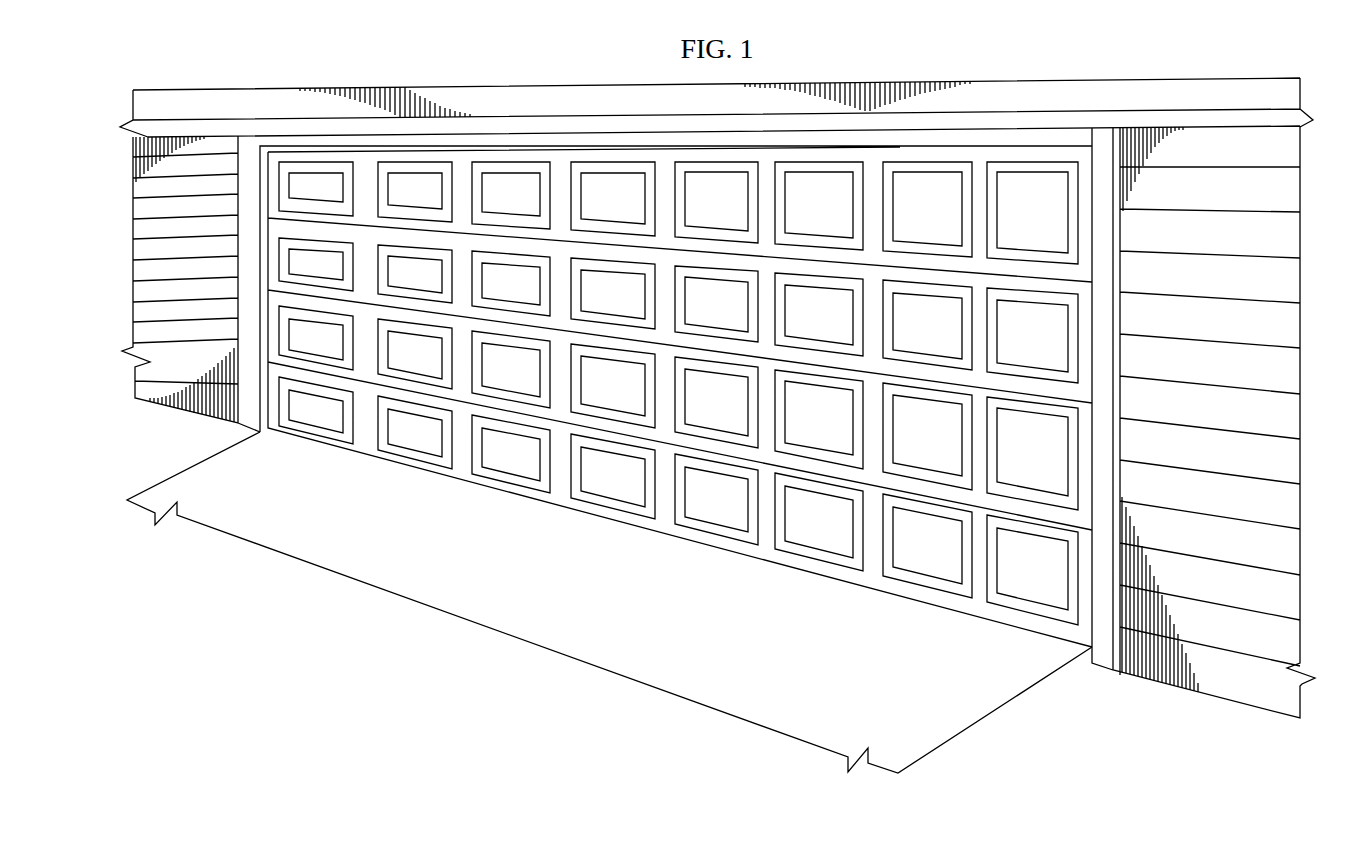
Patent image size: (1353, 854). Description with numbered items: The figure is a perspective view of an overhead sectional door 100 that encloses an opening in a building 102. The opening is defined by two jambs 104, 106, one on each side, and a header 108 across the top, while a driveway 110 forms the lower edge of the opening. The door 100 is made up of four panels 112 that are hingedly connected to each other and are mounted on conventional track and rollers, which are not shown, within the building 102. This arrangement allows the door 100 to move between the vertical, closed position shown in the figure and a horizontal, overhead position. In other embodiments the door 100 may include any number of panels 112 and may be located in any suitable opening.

The overhead sectional door 100 is at (740, 337).
The building 102 is at (222, 149).
The jamb 104 is at (250, 412).
The jamb 106 is at (1123, 272).
The header 108 is at (533, 143).
The driveway 110 is at (667, 629).
The panels 112 is at (1048, 157).